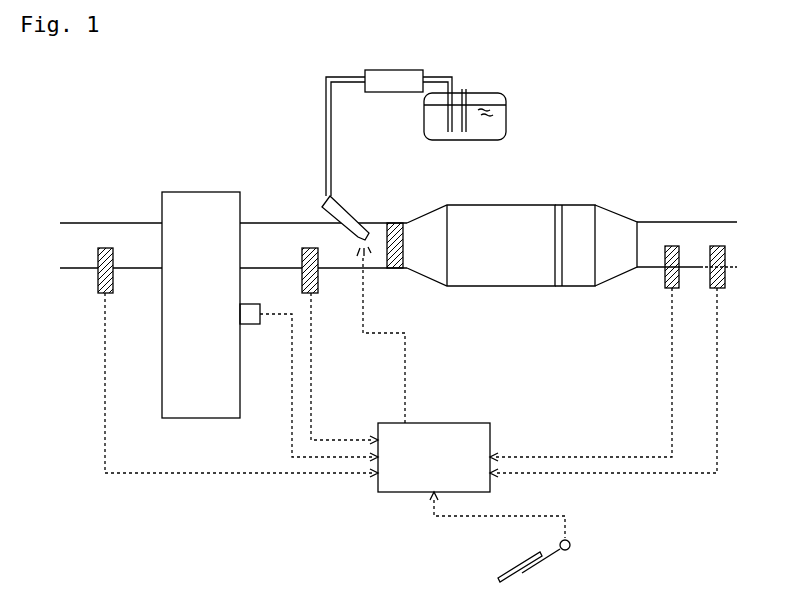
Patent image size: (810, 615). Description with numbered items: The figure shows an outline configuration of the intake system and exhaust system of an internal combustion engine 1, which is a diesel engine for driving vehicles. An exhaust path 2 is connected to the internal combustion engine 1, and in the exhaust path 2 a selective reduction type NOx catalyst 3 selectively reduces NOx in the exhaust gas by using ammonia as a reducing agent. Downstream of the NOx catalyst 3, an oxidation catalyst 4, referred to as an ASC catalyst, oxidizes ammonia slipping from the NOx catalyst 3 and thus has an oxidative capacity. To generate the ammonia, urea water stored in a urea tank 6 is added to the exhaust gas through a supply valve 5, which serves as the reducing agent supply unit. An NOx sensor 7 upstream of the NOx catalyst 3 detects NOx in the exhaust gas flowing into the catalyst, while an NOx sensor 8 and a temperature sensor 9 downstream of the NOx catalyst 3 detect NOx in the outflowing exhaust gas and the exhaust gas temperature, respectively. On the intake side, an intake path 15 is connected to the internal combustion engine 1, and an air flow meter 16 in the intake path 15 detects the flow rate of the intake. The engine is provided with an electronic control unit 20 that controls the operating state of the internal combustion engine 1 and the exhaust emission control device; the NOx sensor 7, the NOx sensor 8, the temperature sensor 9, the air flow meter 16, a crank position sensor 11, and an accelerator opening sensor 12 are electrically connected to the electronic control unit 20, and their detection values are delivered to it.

The internal combustion engine 1 is at (202, 192).
The exhaust path 2 is at (287, 222).
The selective reduction type NOx catalyst 3 is at (500, 280).
The oxidation catalyst 4 is at (582, 280).
The supply valve 5 is at (355, 210).
The urea tank 6 is at (508, 110).
The NOx sensor 7 is at (302, 283).
The NOx sensor 8 is at (672, 290).
The temperature sensor 9 is at (717, 290).
The crank position sensor 11 is at (250, 325).
The accelerator opening sensor 12 is at (569, 551).
The intake path 15 is at (100, 222).
The air flow meter 16 is at (98, 295).
The electronic control unit 20 is at (467, 423).